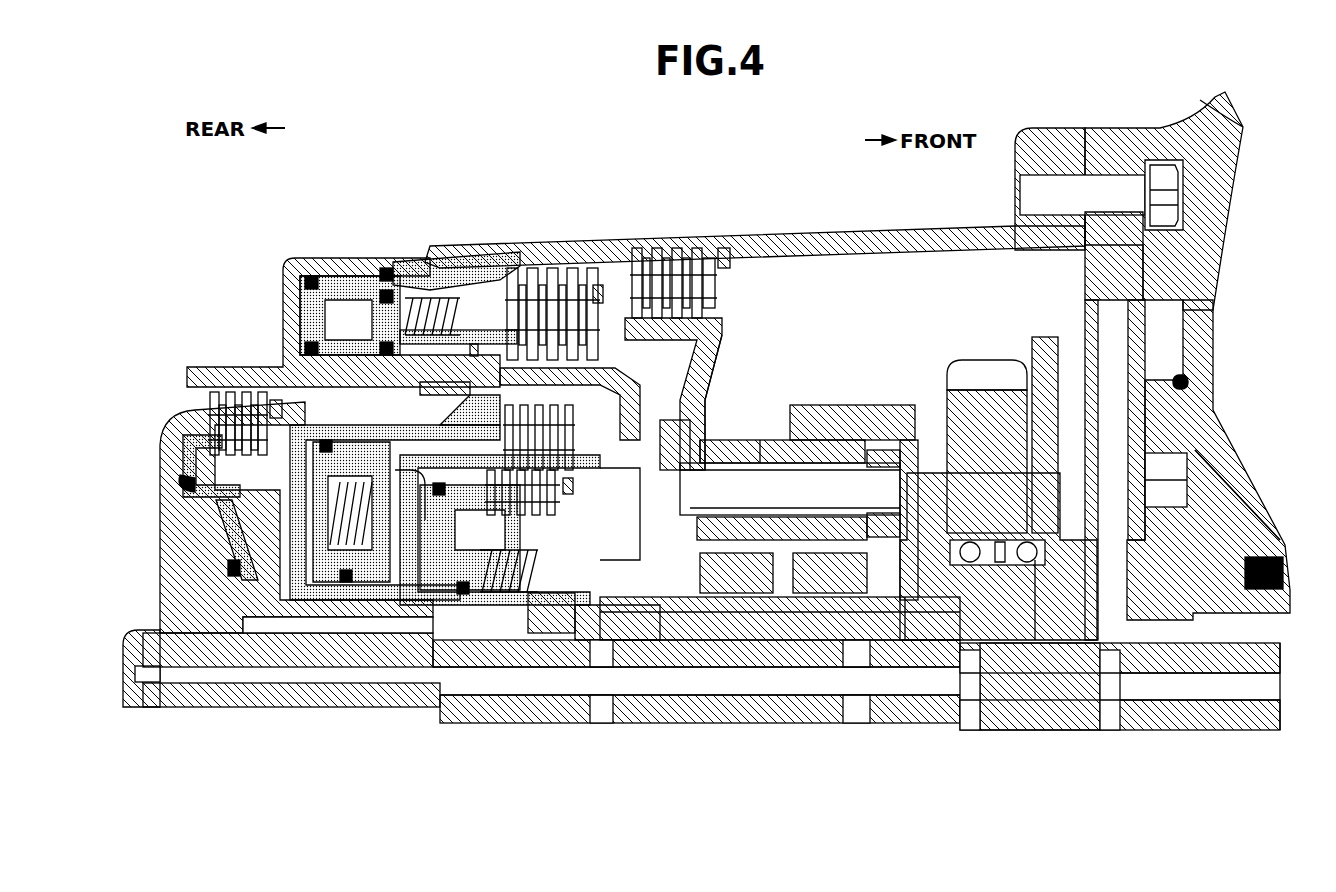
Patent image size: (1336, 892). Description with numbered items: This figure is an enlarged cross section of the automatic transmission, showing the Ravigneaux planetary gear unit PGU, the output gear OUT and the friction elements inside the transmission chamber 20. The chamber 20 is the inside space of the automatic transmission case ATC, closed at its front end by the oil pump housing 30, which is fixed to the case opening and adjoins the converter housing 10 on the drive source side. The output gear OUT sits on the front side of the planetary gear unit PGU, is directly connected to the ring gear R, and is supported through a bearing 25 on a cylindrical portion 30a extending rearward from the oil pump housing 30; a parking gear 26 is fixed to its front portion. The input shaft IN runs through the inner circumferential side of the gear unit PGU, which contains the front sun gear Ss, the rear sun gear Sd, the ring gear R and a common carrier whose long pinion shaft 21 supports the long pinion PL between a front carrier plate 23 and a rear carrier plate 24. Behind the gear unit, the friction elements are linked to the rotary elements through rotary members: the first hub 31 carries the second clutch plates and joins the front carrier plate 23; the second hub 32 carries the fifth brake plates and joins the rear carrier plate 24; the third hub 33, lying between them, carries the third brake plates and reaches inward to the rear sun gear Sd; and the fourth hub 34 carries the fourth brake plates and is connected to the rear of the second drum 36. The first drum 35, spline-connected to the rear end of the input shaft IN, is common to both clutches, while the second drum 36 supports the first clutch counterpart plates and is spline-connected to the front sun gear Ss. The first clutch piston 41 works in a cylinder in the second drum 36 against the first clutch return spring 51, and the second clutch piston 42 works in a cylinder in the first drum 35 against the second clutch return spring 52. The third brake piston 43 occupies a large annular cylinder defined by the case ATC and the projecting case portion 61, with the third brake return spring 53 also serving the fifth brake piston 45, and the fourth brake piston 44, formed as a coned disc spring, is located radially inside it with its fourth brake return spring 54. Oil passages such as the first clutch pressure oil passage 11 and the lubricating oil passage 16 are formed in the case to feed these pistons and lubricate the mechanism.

The converter housing 10 is at (1148, 124).
The first clutch pressure oil passage 11 is at (280, 625).
The lubricating oil passage 16 is at (135, 707).
The transmission chamber 20 is at (862, 302).
The long pinion shaft 21 is at (758, 445).
The front carrier plate 23 is at (905, 640).
The rear carrier plate 24 is at (728, 440).
The bearing 25 is at (1035, 640).
The parking gear 26 is at (1045, 337).
The oil pump housing 30 is at (1075, 278).
The cylindrical portion 30a is at (1000, 640).
The first hub 31 is at (588, 594).
The second hub 32 is at (724, 330).
The third hub 33 is at (698, 340).
The fourth hub 34 is at (268, 478).
The first drum 35 is at (400, 485).
The second drum 36 is at (283, 375).
The first clutch piston 41 is at (355, 472).
The second clutch piston 42 is at (470, 525).
The third brake piston 43 is at (480, 330).
The fourth brake piston 44 is at (190, 535).
The fifth brake piston 45 is at (347, 300).
The first clutch return spring 51 is at (360, 528).
The second clutch return spring 52 is at (560, 532).
The third brake return spring 53 is at (425, 298).
The fourth brake return spring 54 is at (238, 530).
The projecting case portion 61 is at (440, 385).
The Ravigneaux planetary gear unit PGU is at (832, 388).
The ring gear R is at (862, 405).
The long pinion PL is at (782, 438).
The output gear OUT is at (985, 375).
The input shaft IN is at (1055, 700).
The rear sun gear Sd is at (722, 640).
The front sun gear Ss is at (822, 640).
The automatic transmission case ATC is at (1015, 132).